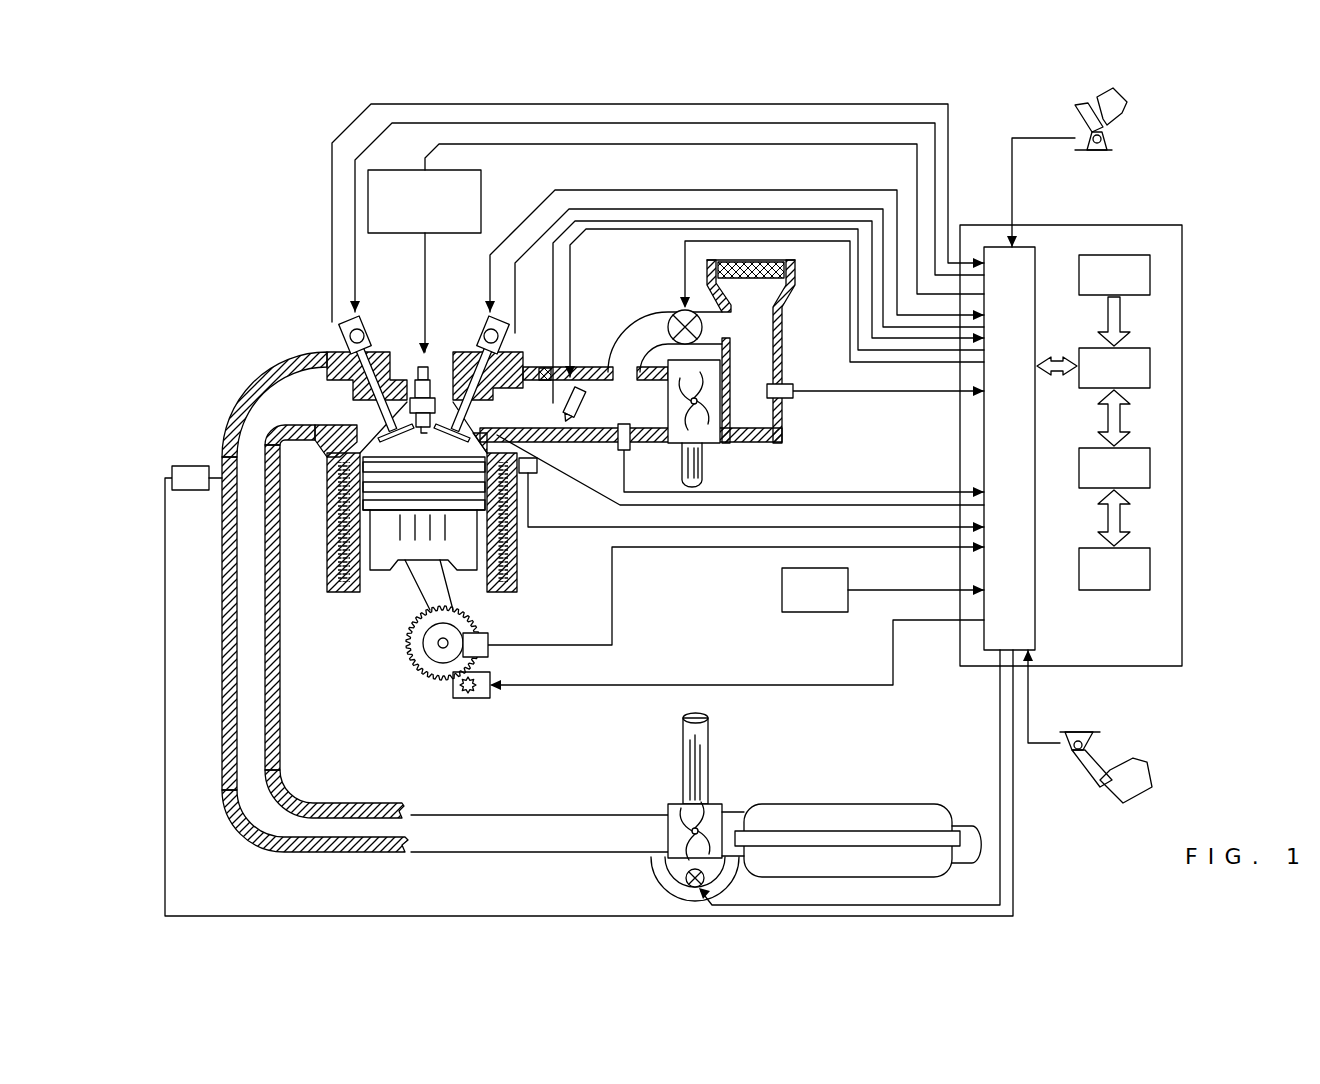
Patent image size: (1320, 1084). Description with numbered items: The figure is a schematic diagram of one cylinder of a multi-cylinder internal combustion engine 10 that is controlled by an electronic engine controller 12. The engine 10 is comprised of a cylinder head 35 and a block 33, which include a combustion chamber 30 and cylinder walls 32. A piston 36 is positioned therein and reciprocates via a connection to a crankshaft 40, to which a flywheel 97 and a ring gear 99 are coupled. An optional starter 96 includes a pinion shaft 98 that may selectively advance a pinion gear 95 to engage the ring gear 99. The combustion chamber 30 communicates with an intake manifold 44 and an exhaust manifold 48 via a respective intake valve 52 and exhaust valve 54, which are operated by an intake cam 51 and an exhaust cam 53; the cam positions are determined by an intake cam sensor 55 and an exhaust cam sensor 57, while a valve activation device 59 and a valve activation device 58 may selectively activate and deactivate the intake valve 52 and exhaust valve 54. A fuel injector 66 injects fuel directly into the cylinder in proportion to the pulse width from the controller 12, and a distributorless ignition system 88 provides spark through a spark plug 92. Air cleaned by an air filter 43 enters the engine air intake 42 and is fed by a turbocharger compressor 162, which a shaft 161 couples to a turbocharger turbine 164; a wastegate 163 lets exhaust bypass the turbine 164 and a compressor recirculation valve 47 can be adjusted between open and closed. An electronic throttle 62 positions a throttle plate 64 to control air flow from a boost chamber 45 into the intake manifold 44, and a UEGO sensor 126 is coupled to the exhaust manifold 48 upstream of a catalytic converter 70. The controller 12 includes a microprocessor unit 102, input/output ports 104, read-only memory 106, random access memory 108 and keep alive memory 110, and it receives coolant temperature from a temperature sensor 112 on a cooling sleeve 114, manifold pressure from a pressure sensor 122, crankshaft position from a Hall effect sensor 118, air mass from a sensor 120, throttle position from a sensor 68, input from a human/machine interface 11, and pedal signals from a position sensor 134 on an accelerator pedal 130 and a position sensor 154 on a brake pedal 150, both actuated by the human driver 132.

The internal combustion engine 10 is at (258, 300).
The human/machine interface 11 is at (815, 590).
The electronic engine controller 12 is at (1182, 226).
The combustion chamber 30 is at (405, 450).
The cylinder walls 32 is at (368, 583).
The block 33 is at (321, 494).
The cylinder head 35 is at (316, 348).
The piston 36 is at (407, 545).
The crankshaft 40 is at (433, 663).
The engine air intake 42 is at (625, 277).
The air filter 43 is at (773, 270).
The intake manifold 44 is at (549, 420).
The boost chamber 45 is at (644, 417).
The compressor recirculation valve 47 is at (677, 311).
The exhaust manifold 48 is at (305, 425).
The intake cam 51 is at (476, 320).
The intake valve 52 is at (467, 412).
The exhaust cam 53 is at (353, 320).
The exhaust valve 54 is at (377, 432).
The intake cam sensor 55 is at (503, 340).
The exhaust cam sensor 57 is at (346, 335).
The valve activation device 58 is at (372, 330).
The valve activation device 59 is at (484, 350).
The electronic throttle 62 is at (580, 400).
The throttle plate 64 is at (570, 418).
The fuel injector 66 is at (537, 466).
The throttle position sensor 68 is at (545, 368).
The catalytic converter 70 is at (784, 804).
The distributorless ignition system 88 is at (375, 170).
The spark plug 92 is at (430, 358).
The pinion gear 95 is at (478, 700).
The starter 96 is at (488, 700).
The flywheel 97 is at (412, 652).
The pinion shaft 98 is at (462, 707).
The ring gear 99 is at (437, 690).
The microprocessor unit 102 is at (1152, 366).
The input/output ports 104 is at (1036, 252).
The read-only memory 106 is at (1152, 270).
The random access memory 108 is at (1152, 466).
The keep alive memory 110 is at (1152, 566).
The temperature sensor 112 is at (510, 488).
The cooling sleeve 114 is at (510, 553).
The Hall effect sensor 118 is at (488, 633).
The air mass sensor 120 is at (793, 385).
The pressure sensor 122 is at (617, 443).
The Universal Exhaust Gas Oxygen sensor 126 is at (172, 466).
The accelerator pedal 130 is at (1085, 120).
The human driver 132 is at (1130, 103).
The position sensor 134 is at (1115, 140).
The brake pedal 150 is at (1100, 782).
The position sensor 154 is at (1066, 742).
The shaft 161 is at (682, 458).
The turbocharger compressor 162 is at (706, 432).
The wastegate 163 is at (688, 884).
The turbocharger turbine 164 is at (676, 804).